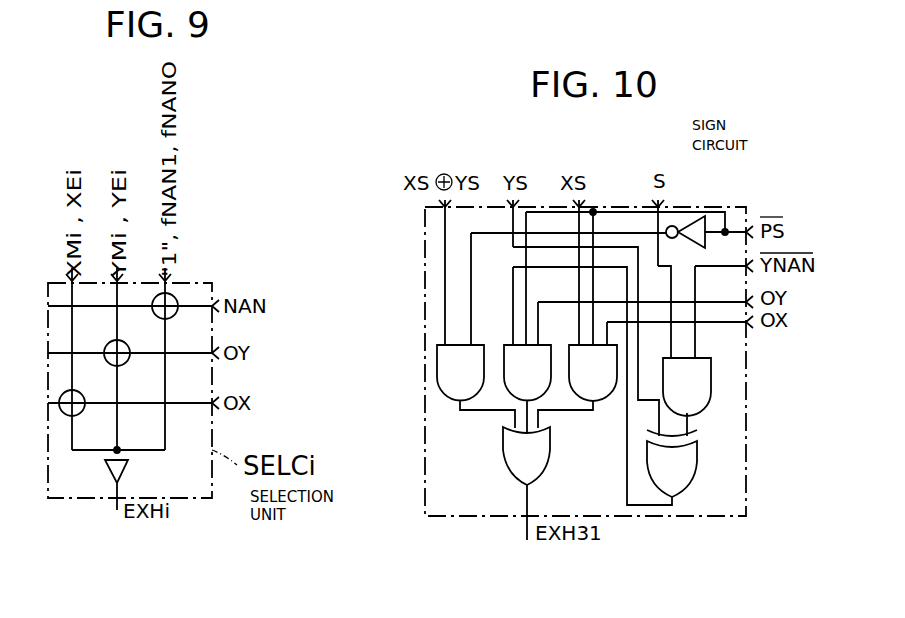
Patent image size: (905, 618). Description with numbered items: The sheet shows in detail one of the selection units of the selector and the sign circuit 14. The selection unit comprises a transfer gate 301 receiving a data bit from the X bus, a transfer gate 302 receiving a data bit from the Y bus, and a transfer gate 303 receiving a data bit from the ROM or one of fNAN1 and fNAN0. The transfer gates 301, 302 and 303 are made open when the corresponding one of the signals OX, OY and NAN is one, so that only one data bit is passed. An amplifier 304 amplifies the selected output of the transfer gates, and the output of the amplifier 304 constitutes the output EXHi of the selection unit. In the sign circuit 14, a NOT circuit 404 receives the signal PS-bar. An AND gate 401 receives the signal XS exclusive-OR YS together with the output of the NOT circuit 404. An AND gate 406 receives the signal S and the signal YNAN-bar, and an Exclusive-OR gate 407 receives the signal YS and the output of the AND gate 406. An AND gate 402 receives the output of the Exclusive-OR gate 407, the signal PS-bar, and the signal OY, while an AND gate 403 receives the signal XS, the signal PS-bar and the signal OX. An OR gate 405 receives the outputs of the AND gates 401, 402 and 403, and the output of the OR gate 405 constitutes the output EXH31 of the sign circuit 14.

In FIG. 9, the transfer gate 301 is at (66, 415).
In FIG. 9, the transfer gate 302 is at (130, 360).
In FIG. 9, the transfer gate 303 is at (176, 298).
In FIG. 9, the amplifier 304 is at (128, 470).
In FIG. 10, the AND gate 401 is at (453, 393).
In FIG. 10, the AND gate 402 is at (512, 390).
In FIG. 10, the AND gate 403 is at (603, 393).
In FIG. 10, the NOT circuit 404 is at (693, 218).
In FIG. 10, the OR gate 405 is at (537, 468).
In FIG. 10, the AND gate 406 is at (711, 392).
In FIG. 10, the Exclusive-OR gate 407 is at (690, 478).
In FIG. 10, the sign circuit 14 is at (720, 516).